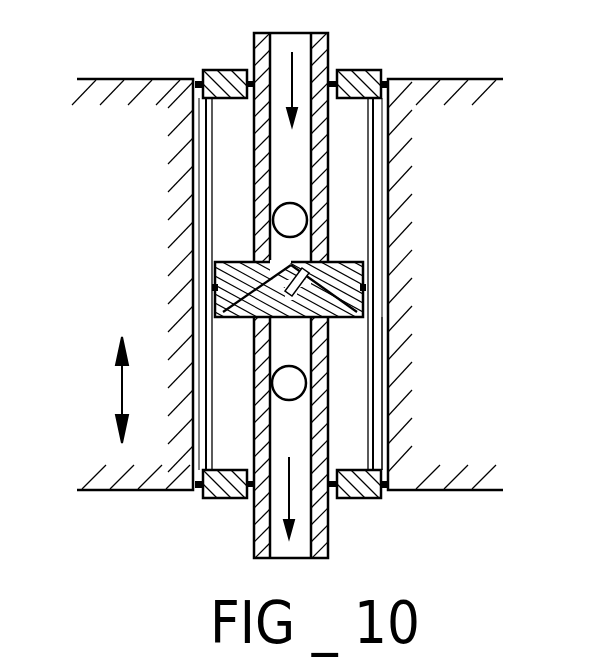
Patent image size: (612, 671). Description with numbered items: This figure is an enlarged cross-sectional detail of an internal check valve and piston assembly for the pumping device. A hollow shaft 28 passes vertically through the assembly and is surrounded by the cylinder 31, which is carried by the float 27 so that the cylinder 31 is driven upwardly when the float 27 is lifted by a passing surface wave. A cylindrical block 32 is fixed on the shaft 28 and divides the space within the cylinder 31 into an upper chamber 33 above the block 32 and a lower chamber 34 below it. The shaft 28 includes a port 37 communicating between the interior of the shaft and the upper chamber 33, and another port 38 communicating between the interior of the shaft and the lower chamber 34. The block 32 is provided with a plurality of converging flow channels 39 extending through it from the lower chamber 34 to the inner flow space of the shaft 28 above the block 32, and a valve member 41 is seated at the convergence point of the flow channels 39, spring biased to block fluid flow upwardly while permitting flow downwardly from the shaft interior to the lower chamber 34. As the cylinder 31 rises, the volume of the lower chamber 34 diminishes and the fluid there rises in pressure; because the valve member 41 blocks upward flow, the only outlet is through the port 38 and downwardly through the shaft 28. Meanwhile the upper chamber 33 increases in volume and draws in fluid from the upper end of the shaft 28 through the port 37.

The float 27 is at (127, 78).
The shaft 28 is at (253, 48).
The cylinder 31 is at (206, 172).
The cylindrical block 32 is at (215, 266).
The upper chamber 33 is at (353, 147).
The lower chamber 34 is at (352, 440).
The port 37 is at (292, 220).
The port 38 is at (296, 388).
The converging flow channels 39 is at (230, 307).
The valve member 41 is at (296, 268).